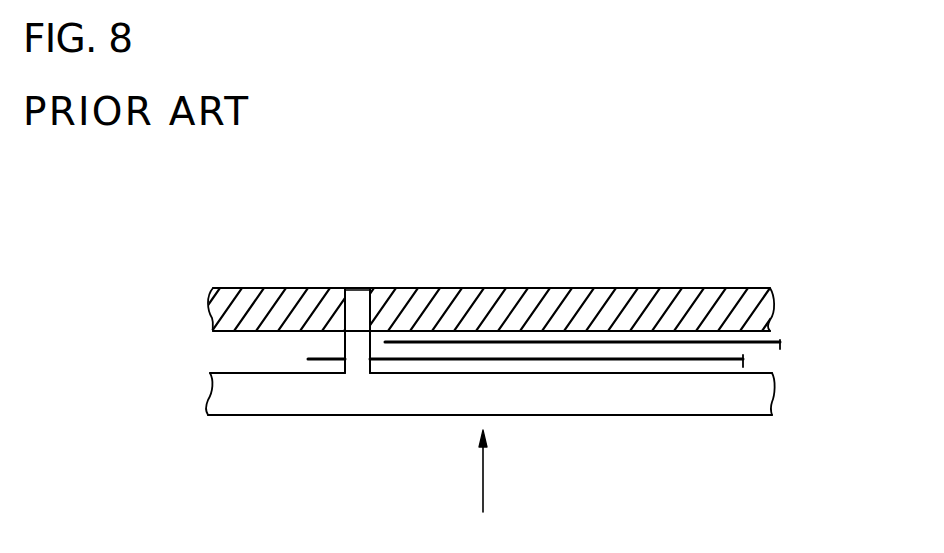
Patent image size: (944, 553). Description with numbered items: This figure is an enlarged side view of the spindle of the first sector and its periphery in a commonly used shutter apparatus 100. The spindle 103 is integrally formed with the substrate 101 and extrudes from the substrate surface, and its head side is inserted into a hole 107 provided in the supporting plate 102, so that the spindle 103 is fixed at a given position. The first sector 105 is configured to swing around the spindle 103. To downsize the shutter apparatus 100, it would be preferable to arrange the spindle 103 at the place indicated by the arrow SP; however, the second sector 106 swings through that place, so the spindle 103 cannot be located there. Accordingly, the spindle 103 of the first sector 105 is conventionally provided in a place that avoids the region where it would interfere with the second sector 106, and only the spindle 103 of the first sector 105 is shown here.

The shutter apparatus 100 is at (728, 248).
The substrate 101 is at (750, 407).
The supporting plate 102 is at (753, 302).
The spindle 103 is at (352, 346).
The first sector 105 is at (763, 353).
The second sector 106 is at (776, 336).
The hole 107 is at (364, 287).
The arrow SP is at (483, 488).